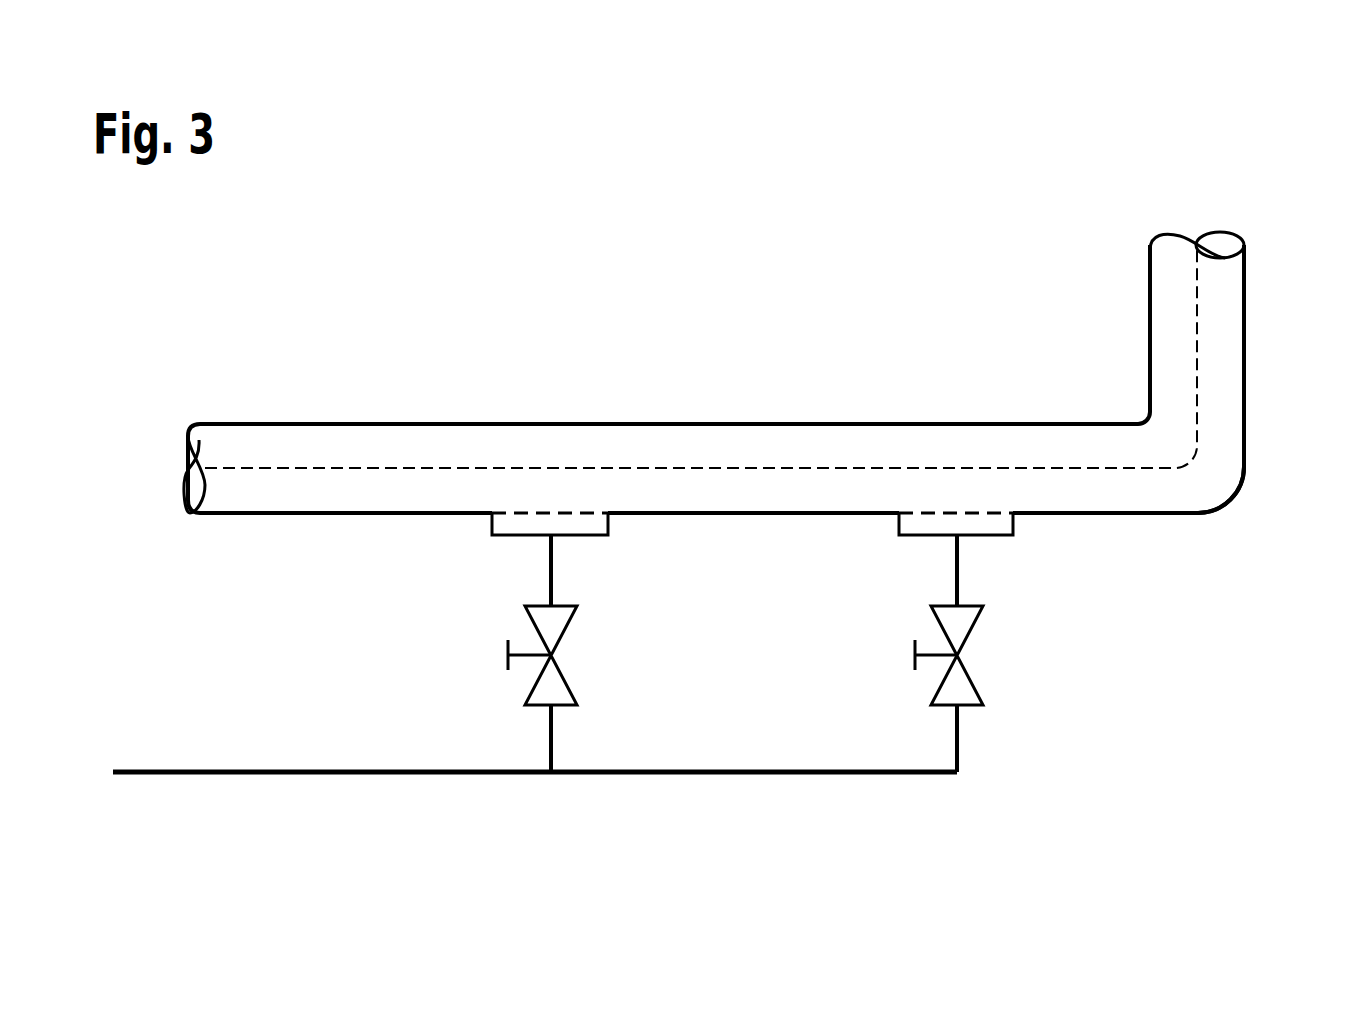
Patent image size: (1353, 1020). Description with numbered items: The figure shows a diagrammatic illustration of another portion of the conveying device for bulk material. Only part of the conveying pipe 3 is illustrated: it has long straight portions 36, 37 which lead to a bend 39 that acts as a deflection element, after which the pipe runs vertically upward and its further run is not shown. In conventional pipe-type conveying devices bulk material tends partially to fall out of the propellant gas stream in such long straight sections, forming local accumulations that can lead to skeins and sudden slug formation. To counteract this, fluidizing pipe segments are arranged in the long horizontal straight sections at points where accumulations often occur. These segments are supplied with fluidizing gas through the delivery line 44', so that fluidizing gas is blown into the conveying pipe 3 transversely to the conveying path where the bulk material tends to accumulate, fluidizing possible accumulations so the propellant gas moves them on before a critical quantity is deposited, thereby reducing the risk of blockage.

The conveying pipe 3 is at (271, 438).
The straight portion 36 is at (763, 438).
The straight portion 37 is at (1127, 438).
The bend 39 is at (1213, 489).
The delivery line 44' is at (535, 720).